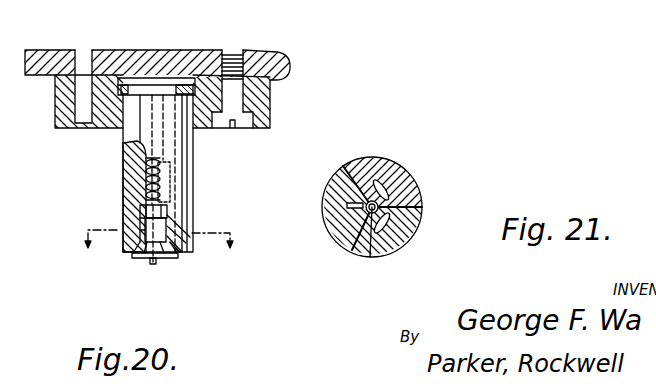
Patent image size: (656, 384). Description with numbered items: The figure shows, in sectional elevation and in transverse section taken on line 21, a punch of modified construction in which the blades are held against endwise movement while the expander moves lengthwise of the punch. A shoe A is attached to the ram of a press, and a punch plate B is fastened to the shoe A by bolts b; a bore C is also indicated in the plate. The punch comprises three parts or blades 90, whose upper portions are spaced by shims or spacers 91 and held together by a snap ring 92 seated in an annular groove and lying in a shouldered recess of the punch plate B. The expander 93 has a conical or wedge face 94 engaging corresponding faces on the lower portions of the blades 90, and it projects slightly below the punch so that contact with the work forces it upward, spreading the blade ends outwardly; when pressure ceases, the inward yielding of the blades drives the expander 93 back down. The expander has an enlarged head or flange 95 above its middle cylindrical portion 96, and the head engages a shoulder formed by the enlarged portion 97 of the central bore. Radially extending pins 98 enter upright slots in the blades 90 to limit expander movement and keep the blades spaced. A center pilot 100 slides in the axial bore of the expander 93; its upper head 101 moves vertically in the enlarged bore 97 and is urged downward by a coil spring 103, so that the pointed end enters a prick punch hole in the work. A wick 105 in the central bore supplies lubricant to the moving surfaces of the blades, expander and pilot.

In FIG. 20, the shoe A is at (290, 68).
In FIG. 20, the punch plate B is at (268, 98).
In FIG. 20, the bore C is at (82, 58).
In FIG. 20, the bolts b is at (237, 55).
In FIG. 20, the shims or spacers 91 is at (140, 80).
In FIG. 20, the spring or snap ring 92 is at (198, 82).
In FIG. 20, the punch parts or blades 90 is at (122, 190).
In FIG. 21, the punch parts or blades 90 is at (420, 217).
In FIG. 20, the wick 105 is at (187, 148).
In FIG. 20, the enlarged portion of the central bore 97 is at (123, 165).
In FIG. 20, the coil spring 103 is at (147, 173).
In FIG. 20, the head or flange of the expander 95 is at (143, 213).
In FIG. 20, the middle cylindrical portion of the expander 96 is at (167, 222).
In FIG. 21, the middle cylindrical portion of the expander 96 is at (372, 195).
In FIG. 20, the flange or head of the center pilot 101 is at (170, 203).
In FIG. 20, the conical or wedge face 94 is at (177, 255).
In FIG. 20, the expander 93 is at (163, 253).
In FIG. 21, the expander 93 is at (370, 257).
In FIG. 20, the radially outwardly extending pins 98 is at (118, 248).
In FIG. 21, the radially outwardly extending pins 98 is at (382, 195).
In FIG. 20, the center pilot 100 is at (150, 260).
In FIG. 21, the center pilot 100 is at (350, 200).
In FIG. 20, the section line 21 is at (159, 252).